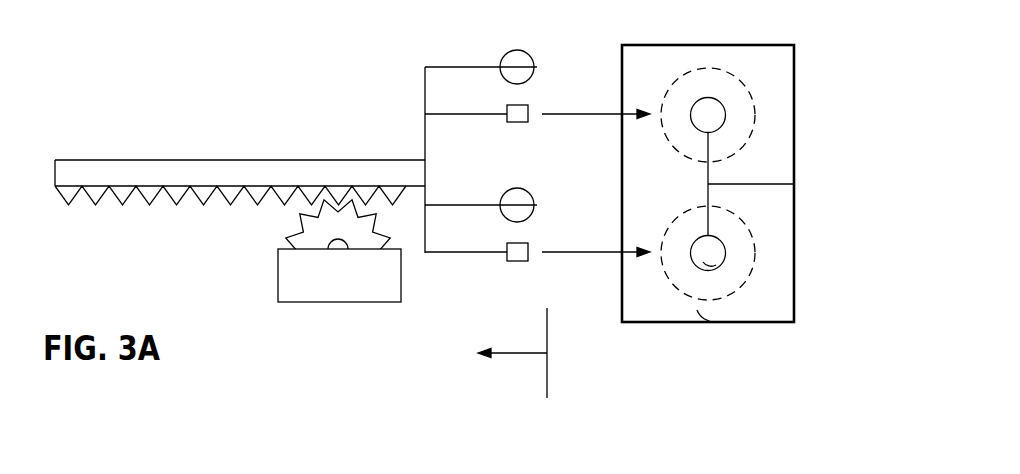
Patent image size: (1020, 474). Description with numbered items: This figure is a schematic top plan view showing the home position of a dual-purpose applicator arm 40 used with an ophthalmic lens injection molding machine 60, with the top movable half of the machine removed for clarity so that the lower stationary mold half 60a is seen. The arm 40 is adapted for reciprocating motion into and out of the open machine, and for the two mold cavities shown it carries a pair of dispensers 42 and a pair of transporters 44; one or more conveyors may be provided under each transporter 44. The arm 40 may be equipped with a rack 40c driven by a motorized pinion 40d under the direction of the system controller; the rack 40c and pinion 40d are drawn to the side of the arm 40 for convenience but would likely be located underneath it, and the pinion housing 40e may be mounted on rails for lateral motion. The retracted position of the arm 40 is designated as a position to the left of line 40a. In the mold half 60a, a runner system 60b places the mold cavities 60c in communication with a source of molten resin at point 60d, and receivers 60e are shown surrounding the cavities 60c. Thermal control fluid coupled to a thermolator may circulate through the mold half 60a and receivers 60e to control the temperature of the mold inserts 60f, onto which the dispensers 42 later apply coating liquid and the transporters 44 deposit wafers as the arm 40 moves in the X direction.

The applicator arm 40 is at (238, 138).
The line 40a is at (518, 353).
The rack 40c is at (145, 203).
The motorized pinion 40d is at (303, 215).
The pinion housing 40e is at (278, 258).
The dispensers 42 is at (462, 253).
The transporters 44 is at (465, 67).
The injection molding machine 60 is at (674, 345).
The lower stationary mold half 60a is at (697, 310).
The runner system 60b is at (760, 183).
The mold cavities 60c is at (733, 247).
The point 60d is at (822, 193).
The receivers 60e is at (720, 297).
The mold inserts 60f is at (713, 259).